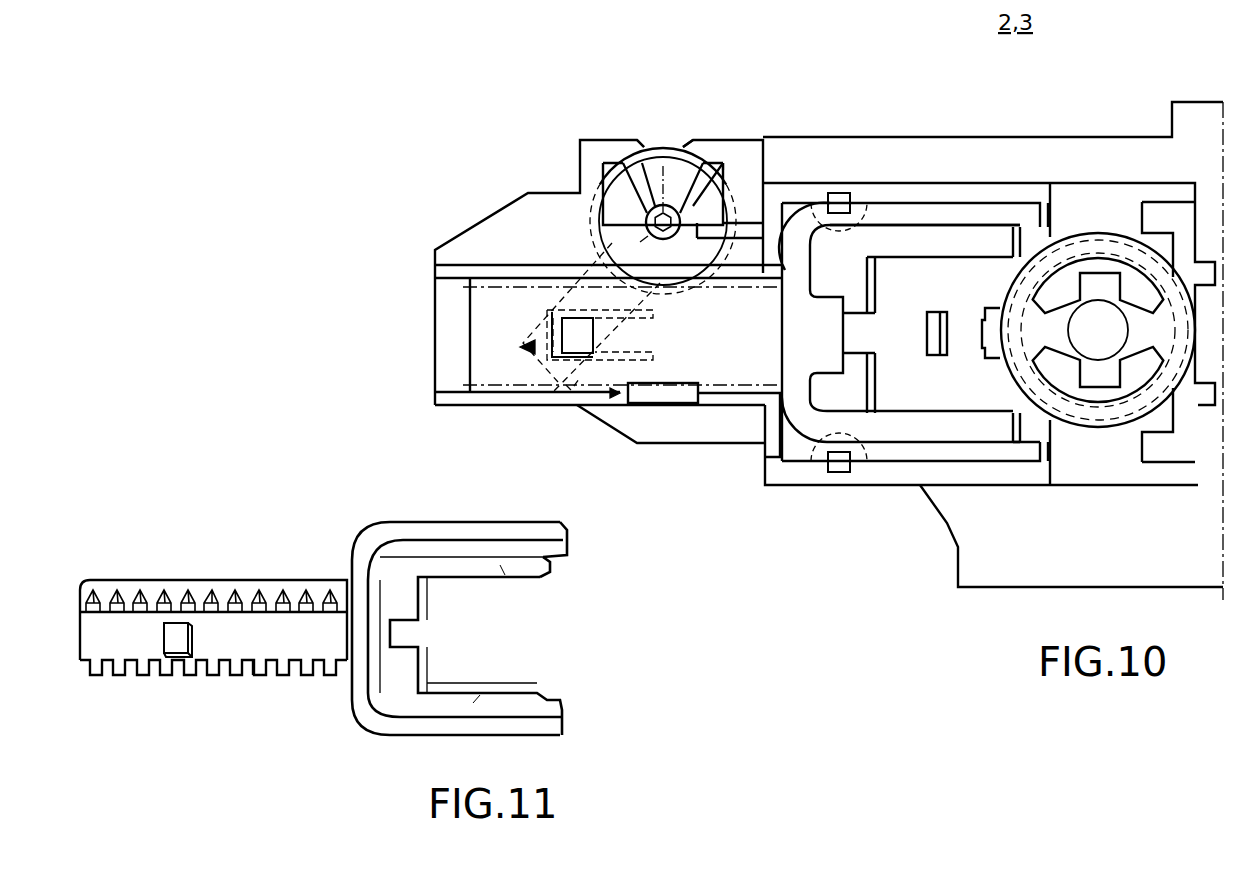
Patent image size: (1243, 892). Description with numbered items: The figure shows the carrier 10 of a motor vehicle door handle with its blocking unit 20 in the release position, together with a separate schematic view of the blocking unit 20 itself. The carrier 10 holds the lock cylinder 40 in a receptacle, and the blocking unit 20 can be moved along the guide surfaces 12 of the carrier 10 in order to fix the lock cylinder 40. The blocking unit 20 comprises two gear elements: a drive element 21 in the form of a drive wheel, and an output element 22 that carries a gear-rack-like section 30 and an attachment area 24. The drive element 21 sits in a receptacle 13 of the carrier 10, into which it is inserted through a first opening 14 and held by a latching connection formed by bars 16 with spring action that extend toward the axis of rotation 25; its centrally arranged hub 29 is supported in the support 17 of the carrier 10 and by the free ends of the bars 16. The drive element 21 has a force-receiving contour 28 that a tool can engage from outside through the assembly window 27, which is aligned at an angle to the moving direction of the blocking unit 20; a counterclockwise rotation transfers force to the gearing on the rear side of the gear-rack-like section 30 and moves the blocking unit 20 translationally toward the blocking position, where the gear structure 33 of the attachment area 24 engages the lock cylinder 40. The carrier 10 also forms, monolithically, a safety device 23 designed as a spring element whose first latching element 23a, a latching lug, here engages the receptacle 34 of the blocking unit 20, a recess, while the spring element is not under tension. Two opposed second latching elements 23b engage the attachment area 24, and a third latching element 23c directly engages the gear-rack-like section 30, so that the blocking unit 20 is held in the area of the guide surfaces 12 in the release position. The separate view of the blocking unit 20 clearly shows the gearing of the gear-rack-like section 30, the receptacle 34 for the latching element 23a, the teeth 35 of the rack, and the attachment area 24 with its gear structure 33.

In FIG. 10, the carrier 10 is at (1069, 132).
In FIG. 10, the guide surfaces 12 is at (445, 315).
In FIG. 10, the receptacle 13 is at (690, 131).
In FIG. 10, the first opening 14 is at (712, 140).
In FIG. 10, the bars with spring action 16 is at (638, 182).
In FIG. 10, the support 17 is at (637, 290).
In FIG. 10, the blocking unit 20 is at (652, 333).
In FIG. 11, the blocking unit 20 is at (414, 624).
In FIG. 10, the drive element 21 is at (670, 147).
In FIG. 10, the output element 22 is at (765, 296).
In FIG. 11, the output element 22 is at (439, 624).
In FIG. 10, the safety device 23 is at (524, 347).
In FIG. 10, the first latching element 23a is at (567, 352).
In FIG. 10, the second latching elements 23b is at (835, 202).
In FIG. 10, the third latching element 23c is at (662, 404).
In FIG. 10, the attachment area 24 is at (838, 412).
In FIG. 11, the attachment area 24 is at (560, 500).
In FIG. 10, the axis of rotation 25 is at (660, 214).
In FIG. 10, the assembly window 27 is at (560, 305).
In FIG. 10, the force-receiving contour 28 is at (653, 222).
In FIG. 10, the hub 29 is at (640, 242).
In FIG. 10, the gear-rack-like section 30 is at (733, 405).
In FIG. 11, the gear-rack-like section 30 is at (82, 558).
In FIG. 11, the gear structure 33 is at (473, 703).
In FIG. 10, the receptacle 34 is at (582, 360).
In FIG. 11, the receptacle 34 is at (177, 643).
In FIG. 10, the teeth 35 is at (619, 396).
In FIG. 11, the teeth 35 is at (258, 663).
In FIG. 10, the lock cylinder 40 is at (1090, 420).